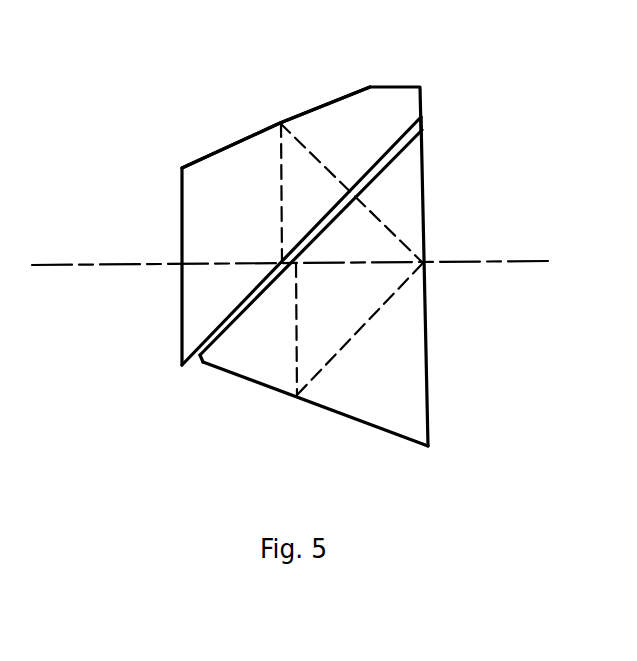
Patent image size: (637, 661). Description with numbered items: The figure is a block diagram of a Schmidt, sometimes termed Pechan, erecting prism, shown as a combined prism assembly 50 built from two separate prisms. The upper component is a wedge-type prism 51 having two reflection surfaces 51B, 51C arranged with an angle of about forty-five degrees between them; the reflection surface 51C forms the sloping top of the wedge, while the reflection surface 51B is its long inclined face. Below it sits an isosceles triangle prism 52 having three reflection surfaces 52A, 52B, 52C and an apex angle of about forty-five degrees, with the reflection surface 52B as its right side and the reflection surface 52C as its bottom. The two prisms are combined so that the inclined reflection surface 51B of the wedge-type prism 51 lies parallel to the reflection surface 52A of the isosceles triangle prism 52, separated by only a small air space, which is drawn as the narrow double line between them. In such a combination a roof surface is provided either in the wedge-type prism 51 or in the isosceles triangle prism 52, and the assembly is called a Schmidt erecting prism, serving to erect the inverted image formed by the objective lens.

The prism assembly 50 is at (307, 257).
The wedge-type prism 51 is at (346, 189).
The reflection surface 51B is at (404, 120).
The reflection surface 51C is at (320, 105).
The isosceles triangle prism 52 is at (329, 309).
The reflection surface 52A is at (405, 156).
The reflection surface 52B is at (430, 363).
The reflection surface 52C is at (373, 430).